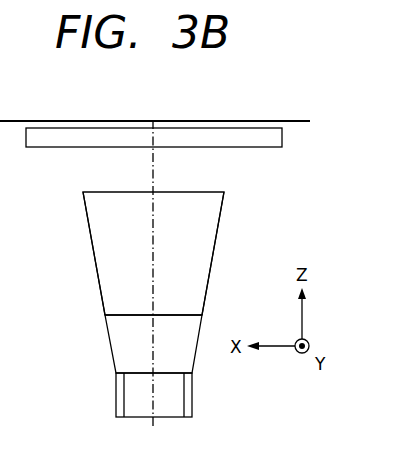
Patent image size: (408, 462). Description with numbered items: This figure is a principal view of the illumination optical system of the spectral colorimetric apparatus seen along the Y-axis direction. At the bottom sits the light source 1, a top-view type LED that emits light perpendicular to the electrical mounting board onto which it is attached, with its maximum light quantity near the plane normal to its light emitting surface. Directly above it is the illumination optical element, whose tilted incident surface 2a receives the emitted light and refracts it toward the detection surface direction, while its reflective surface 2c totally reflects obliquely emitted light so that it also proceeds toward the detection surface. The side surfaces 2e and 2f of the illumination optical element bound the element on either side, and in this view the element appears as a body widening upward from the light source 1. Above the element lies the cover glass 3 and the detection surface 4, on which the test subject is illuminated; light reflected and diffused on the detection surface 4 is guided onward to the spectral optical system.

The light source 1 is at (135, 398).
The incident surface 2a is at (120, 335).
The reflective surface 2c is at (110, 260).
The illumination optical element surface 2e is at (86, 217).
The illumination optical element surface 2f is at (218, 238).
The cover glass 3 is at (56, 133).
The detection surface 4 is at (153, 120).